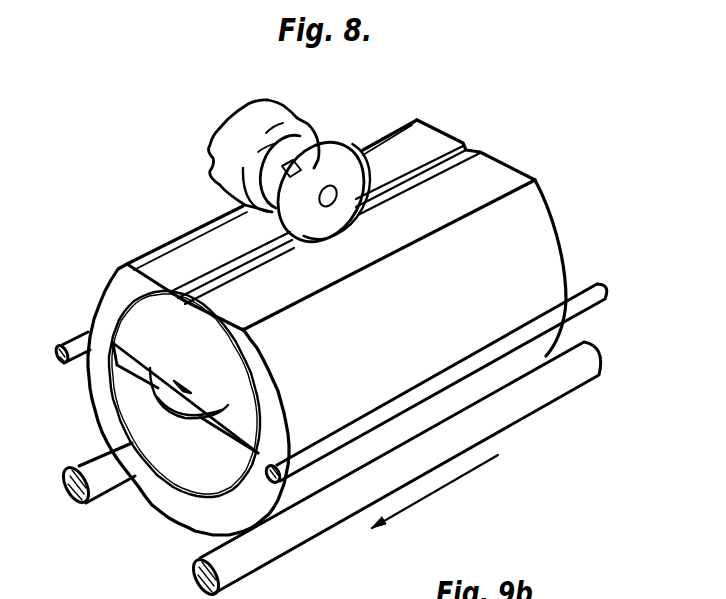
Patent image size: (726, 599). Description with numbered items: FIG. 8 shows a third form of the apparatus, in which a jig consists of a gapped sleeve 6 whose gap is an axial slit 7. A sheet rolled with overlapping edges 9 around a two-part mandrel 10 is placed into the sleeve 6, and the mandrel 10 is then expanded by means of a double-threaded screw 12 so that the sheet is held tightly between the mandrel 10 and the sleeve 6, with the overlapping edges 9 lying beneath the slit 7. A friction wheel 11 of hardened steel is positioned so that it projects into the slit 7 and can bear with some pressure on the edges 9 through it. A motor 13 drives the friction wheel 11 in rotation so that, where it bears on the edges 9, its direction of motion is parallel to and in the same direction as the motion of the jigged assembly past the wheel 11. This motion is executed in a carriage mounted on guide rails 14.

The gapped sleeve 6 is at (540, 230).
The axial slit 7 is at (213, 277).
The overlapping edges 9 is at (181, 302).
The two-part mandrel 10 is at (245, 402).
The friction wheel 11 is at (346, 151).
The double-threaded screw 12 is at (163, 388).
The motor 13 is at (273, 117).
The guide rails 14 is at (70, 340).